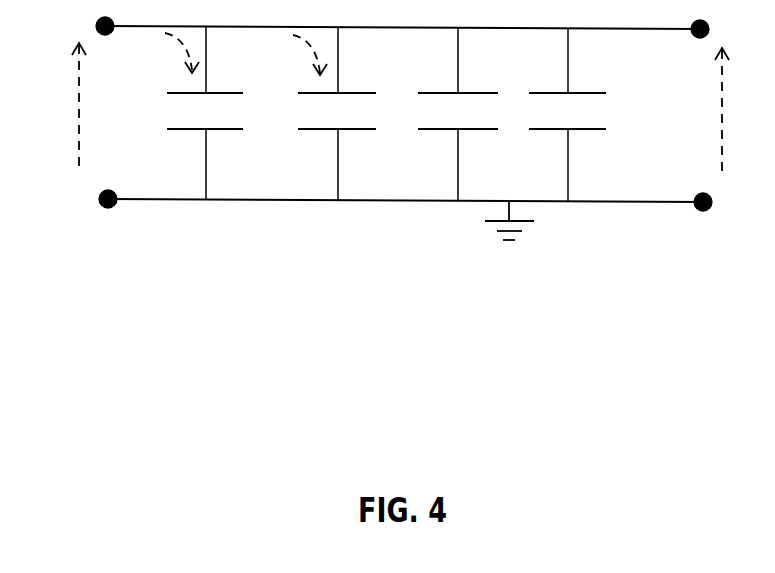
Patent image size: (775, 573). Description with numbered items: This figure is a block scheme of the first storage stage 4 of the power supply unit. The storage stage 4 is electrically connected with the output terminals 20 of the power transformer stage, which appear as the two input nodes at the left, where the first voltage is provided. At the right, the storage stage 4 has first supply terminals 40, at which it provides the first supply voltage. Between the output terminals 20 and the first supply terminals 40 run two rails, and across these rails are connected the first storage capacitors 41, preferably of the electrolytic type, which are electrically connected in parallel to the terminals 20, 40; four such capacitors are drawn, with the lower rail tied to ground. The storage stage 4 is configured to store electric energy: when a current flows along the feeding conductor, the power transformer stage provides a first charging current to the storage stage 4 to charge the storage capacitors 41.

The first storage stage 4 is at (413, 308).
The output terminals 20 is at (111, 220).
The first supply terminals 40 is at (703, 220).
The first storage capacitors 41 is at (320, 152).